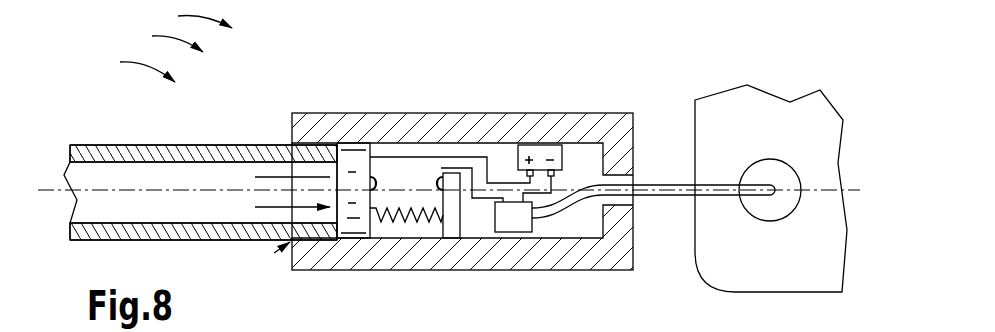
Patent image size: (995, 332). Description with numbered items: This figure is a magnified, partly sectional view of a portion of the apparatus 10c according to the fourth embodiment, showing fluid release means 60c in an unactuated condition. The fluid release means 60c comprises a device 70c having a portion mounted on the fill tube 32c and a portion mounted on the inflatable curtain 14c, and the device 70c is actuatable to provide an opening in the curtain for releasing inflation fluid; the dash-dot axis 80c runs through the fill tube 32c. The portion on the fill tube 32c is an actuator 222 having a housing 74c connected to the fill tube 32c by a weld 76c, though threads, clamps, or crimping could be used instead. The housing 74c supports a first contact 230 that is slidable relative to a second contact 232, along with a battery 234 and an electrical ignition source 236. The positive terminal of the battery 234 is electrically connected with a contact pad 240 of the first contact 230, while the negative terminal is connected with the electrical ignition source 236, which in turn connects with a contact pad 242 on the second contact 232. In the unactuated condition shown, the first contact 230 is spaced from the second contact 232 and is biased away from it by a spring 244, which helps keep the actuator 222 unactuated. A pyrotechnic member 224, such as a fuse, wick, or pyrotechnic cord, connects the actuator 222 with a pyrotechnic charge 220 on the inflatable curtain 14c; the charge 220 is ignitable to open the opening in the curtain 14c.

The apparatus 10c is at (126, 65).
The fluid release means 60c is at (182, 15).
The device 70c is at (155, 37).
The axis / centerline 80c is at (50, 188).
The fill tube 32c is at (148, 158).
The housing 74c is at (335, 130).
The weld 76c is at (290, 146).
The actuator 222 is at (582, 95).
The first contact 230 is at (352, 213).
The contact pad 240 is at (372, 185).
The contact pad 242 is at (440, 183).
The spring 244 is at (415, 222).
The second contact 232 is at (453, 217).
The battery 234 is at (542, 150).
The electrical ignition source 236 is at (513, 218).
The pyrotechnic member 224 is at (664, 195).
The inflatable curtain 14c is at (765, 122).
The pyrotechnic charge 220 is at (768, 210).